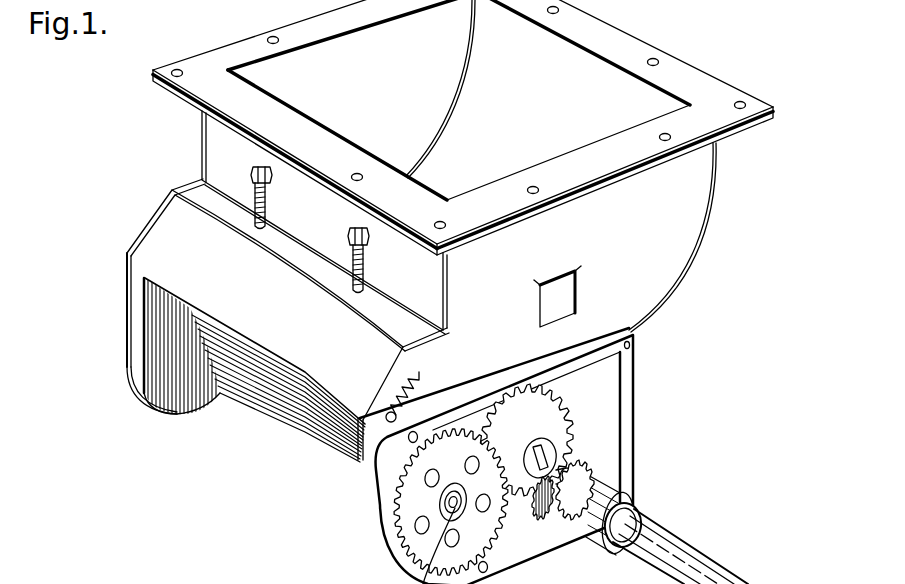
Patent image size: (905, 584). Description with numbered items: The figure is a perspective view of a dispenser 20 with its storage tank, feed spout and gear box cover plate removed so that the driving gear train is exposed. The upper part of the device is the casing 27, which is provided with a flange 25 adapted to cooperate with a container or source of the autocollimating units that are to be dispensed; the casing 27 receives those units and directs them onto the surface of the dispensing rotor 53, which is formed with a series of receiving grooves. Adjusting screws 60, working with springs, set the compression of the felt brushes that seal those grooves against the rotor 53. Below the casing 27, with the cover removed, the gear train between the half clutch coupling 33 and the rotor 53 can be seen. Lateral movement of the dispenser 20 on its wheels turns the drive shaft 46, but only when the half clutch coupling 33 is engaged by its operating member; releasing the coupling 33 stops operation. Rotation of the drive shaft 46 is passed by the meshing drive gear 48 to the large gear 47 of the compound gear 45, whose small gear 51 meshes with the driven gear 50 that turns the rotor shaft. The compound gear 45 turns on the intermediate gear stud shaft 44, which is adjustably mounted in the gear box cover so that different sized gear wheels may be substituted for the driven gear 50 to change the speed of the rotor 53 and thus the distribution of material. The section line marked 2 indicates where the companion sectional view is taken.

The section line 2- 2 is at (693, 5).
The dispenser 20 is at (688, 238).
The flange 25 is at (675, 70).
The casing 27 is at (657, 285).
The half clutch coupling 33 is at (598, 530).
The intermediate gear stud shaft 44 is at (556, 452).
The compound gear 45 is at (566, 424).
The drive shaft 46 is at (698, 576).
The large gear 47 is at (548, 400).
The drive gear 48 is at (572, 468).
The driven gear 50 is at (410, 543).
The small gear 51 is at (472, 440).
The dispensing rotor 53 is at (297, 415).
The adjusting screw 60 is at (356, 273).